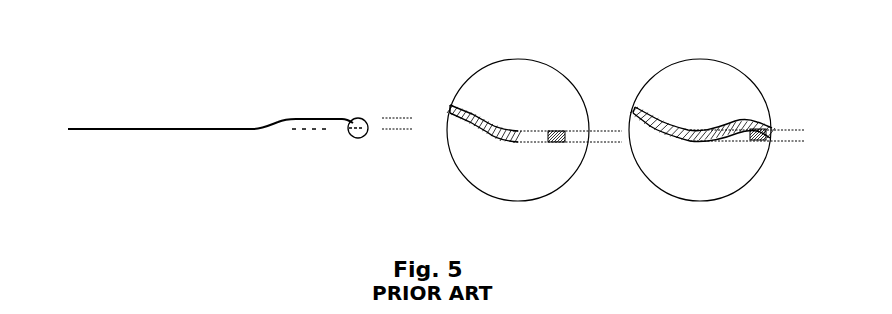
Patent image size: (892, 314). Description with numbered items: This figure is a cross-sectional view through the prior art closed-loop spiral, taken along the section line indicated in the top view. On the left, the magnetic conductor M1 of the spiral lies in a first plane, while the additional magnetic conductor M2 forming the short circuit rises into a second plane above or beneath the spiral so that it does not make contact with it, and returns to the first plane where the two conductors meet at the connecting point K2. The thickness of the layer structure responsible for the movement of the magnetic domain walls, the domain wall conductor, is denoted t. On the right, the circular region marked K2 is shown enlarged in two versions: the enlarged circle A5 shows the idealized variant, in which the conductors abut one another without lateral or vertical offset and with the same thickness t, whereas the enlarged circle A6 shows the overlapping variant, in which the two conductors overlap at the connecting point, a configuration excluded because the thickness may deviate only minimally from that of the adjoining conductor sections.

The magnetic conductor of the spiral M1 is at (208, 131).
The additional magnetic conductor M2 is at (290, 119).
The connecting point K2 is at (351, 117).
The idealized variant A5 is at (507, 59).
The overlapping variant A6 is at (691, 59).
The thickness of the layer structure t is at (609, 149).